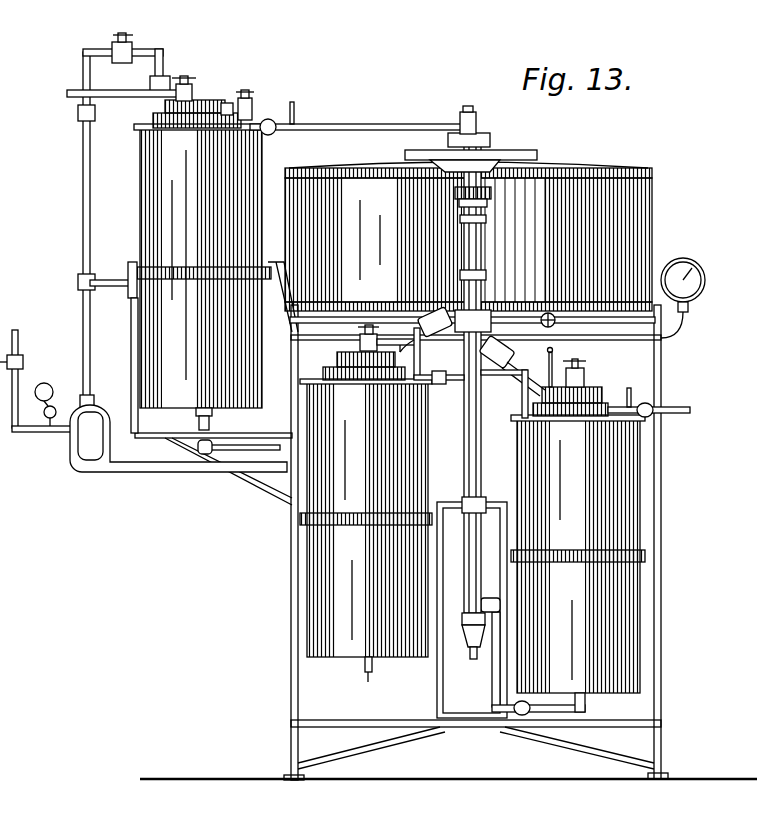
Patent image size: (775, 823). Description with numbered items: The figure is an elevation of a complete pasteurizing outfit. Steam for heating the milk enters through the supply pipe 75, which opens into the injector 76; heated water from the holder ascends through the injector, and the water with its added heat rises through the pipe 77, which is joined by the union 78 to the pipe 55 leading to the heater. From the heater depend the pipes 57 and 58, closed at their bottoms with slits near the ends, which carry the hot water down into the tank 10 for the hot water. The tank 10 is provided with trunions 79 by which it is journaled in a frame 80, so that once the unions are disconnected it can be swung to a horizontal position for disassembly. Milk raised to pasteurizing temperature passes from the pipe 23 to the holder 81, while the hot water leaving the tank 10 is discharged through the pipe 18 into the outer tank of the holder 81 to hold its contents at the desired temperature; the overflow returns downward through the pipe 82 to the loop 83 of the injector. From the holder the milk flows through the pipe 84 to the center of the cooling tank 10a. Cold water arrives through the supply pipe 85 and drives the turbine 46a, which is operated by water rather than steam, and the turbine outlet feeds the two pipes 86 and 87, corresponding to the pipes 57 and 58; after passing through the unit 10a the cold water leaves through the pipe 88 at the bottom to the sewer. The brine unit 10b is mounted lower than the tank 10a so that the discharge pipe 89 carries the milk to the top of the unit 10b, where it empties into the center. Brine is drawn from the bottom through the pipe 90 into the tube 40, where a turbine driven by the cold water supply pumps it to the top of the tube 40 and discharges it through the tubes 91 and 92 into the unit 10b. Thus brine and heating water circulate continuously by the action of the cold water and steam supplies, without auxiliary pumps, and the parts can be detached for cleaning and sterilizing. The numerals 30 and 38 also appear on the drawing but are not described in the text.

The tank 10 is at (144, 190).
The tank 10a is at (410, 492).
The brine unit 10b is at (540, 472).
The water discharge pipe 18 is at (232, 446).
The pipe 23 is at (345, 124).
The valve 30 is at (176, 88).
The valve 38 is at (248, 98).
The tube 40 is at (464, 440).
The turbine 46a is at (492, 314).
The pipe 55 is at (80, 76).
The pipe 57 is at (145, 100).
The pipe 58 is at (168, 82).
The supply pipe 75 is at (18, 346).
The injector 76 is at (82, 400).
The pipe 77 is at (82, 260).
The union 78 is at (78, 112).
The trunions 79 is at (130, 272).
The frame 80 is at (119, 347).
The holder 81 is at (560, 172).
The pipe 82 is at (299, 352).
The loop 83 is at (100, 472).
The pipe 84 is at (420, 315).
The supply pipe 85 is at (575, 321).
The pipe 86 is at (395, 374).
The pipe 87 is at (412, 384).
The pipe 88 is at (372, 668).
The discharge pipe 89 is at (440, 384).
The pipe 90 is at (552, 704).
The tube 91 is at (522, 398).
The tube 92 is at (535, 380).